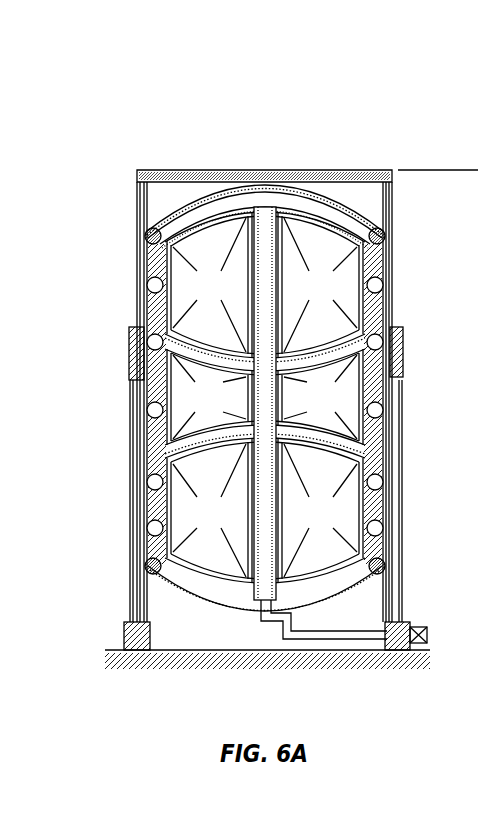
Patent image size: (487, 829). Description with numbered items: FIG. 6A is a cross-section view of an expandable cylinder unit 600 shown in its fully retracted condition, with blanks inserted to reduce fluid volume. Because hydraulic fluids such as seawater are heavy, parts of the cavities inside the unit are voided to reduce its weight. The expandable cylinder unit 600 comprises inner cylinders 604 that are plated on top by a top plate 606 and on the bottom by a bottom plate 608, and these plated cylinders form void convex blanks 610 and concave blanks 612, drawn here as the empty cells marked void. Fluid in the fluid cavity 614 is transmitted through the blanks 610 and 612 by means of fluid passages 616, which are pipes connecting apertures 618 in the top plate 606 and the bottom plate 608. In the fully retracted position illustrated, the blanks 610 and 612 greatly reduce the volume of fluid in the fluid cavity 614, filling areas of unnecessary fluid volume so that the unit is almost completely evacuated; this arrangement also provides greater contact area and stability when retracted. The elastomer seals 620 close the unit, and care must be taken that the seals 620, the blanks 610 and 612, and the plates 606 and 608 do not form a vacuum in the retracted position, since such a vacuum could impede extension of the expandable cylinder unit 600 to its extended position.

The expandable cylinder unit 600 is at (99, 177).
The inner cylinders 604 is at (391, 257).
The top plate 606 is at (358, 213).
The bottom plate 608 is at (395, 376).
The convex blank 610 is at (324, 312).
The concave blank 612 is at (344, 419).
The fluid cavity 614 is at (321, 592).
The fluid passages 616 is at (293, 232).
The apertures 618 is at (265, 211).
The elastomer seals 620 is at (403, 500).